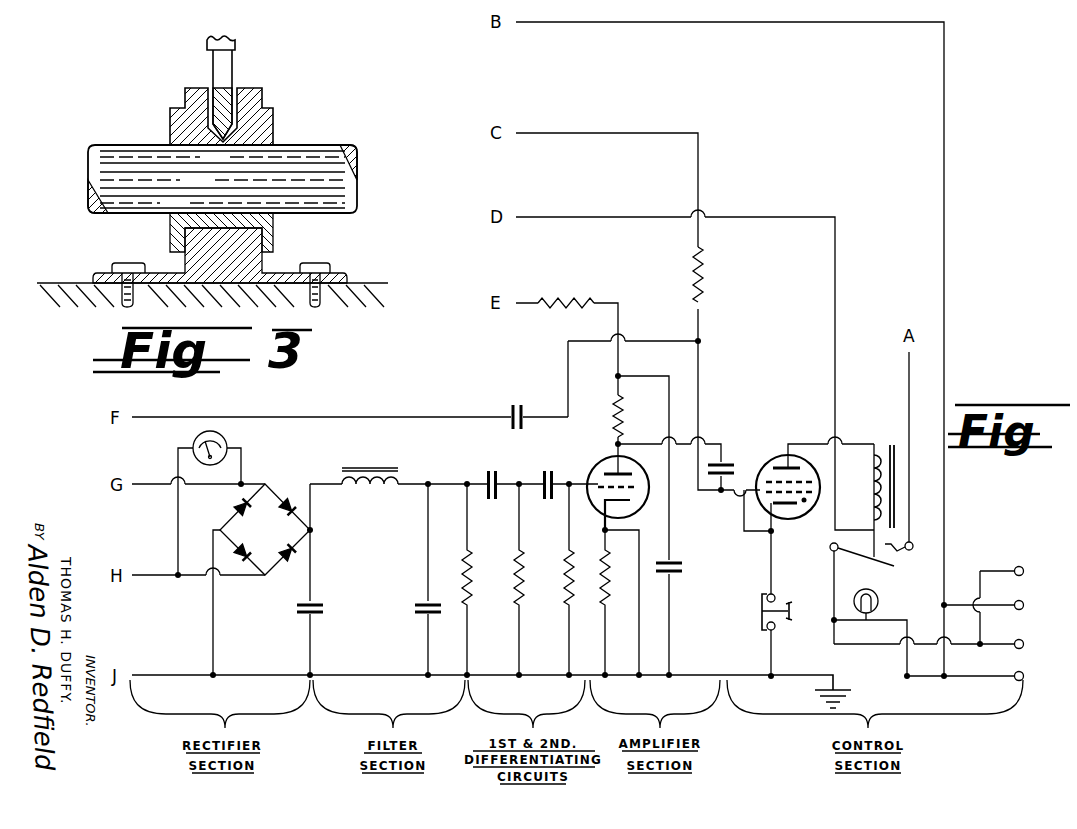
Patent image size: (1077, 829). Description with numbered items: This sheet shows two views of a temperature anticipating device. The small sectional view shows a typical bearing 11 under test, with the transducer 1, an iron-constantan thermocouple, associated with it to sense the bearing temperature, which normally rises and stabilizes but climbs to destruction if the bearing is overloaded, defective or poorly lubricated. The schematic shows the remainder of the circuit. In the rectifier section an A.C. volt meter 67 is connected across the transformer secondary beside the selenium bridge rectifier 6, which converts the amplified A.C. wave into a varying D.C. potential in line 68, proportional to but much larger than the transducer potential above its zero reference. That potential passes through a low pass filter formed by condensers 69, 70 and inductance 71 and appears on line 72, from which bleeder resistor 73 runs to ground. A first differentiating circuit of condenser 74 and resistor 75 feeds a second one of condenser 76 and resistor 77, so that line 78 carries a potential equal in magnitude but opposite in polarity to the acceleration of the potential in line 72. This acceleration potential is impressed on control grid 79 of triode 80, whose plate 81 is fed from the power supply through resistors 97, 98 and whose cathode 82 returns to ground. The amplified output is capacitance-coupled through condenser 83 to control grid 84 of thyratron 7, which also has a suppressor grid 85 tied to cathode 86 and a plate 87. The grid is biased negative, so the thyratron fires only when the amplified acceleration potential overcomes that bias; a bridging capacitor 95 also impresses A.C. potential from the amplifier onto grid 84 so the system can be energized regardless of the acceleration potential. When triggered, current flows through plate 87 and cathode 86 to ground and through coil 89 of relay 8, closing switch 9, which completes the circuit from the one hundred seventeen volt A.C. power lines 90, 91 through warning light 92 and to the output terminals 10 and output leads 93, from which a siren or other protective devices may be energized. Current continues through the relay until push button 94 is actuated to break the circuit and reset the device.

In FIG. 3, the transducer 1 is at (232, 71).
In FIG. 3, the bearing 11 is at (275, 133).
In FIG. 2, the selenium bridge rectifier 6 is at (268, 490).
In FIG. 2, the thyratron 7 is at (779, 489).
In FIG. 2, the relay 8 is at (866, 484).
In FIG. 2, the switch 9 is at (880, 558).
In FIG. 2, the output terminals 10 is at (1010, 606).
In FIG. 2, the A.C. volt meter 67 is at (197, 428).
In FIG. 2, the line 68 is at (302, 533).
In FIG. 2, the condenser 69 is at (316, 612).
In FIG. 2, the condenser 70 is at (425, 613).
In FIG. 2, the inductance 71 is at (367, 490).
In FIG. 2, the line 72 is at (448, 482).
In FIG. 2, the bleeder resistor 73 is at (470, 578).
In FIG. 2, the condenser 74 is at (486, 474).
In FIG. 2, the resistor 75 is at (522, 578).
In FIG. 2, the condenser 76 is at (542, 474).
In FIG. 2, the resistor 77 is at (574, 590).
In FIG. 2, the line 78 is at (581, 482).
In FIG. 2, the control grid 79 is at (637, 490).
In FIG. 2, the triode 80 is at (622, 486).
In FIG. 2, the plate 81 is at (625, 472).
In FIG. 2, the cathode 82 is at (630, 503).
In FIG. 2, the condenser 83 is at (718, 488).
In FIG. 2, the control grid 84 is at (808, 503).
In FIG. 2, the suppressor grid 85 is at (807, 479).
In FIG. 2, the cathode 86 is at (789, 506).
In FIG. 2, the plate 87 is at (777, 466).
In FIG. 2, the coil 89 is at (872, 472).
In FIG. 2, the A.C. power line 90 is at (910, 368).
In FIG. 2, the A.C. power line 91 is at (944, 250).
In FIG. 2, the warning light 92 is at (879, 601).
In FIG. 2, the output leads 93 is at (1001, 588).
In FIG. 2, the push button 94 is at (780, 617).
In FIG. 2, the bridging capacitor 95 is at (511, 416).
In FIG. 2, the resistor 97 is at (567, 298).
In FIG. 2, the resistor 98 is at (613, 410).